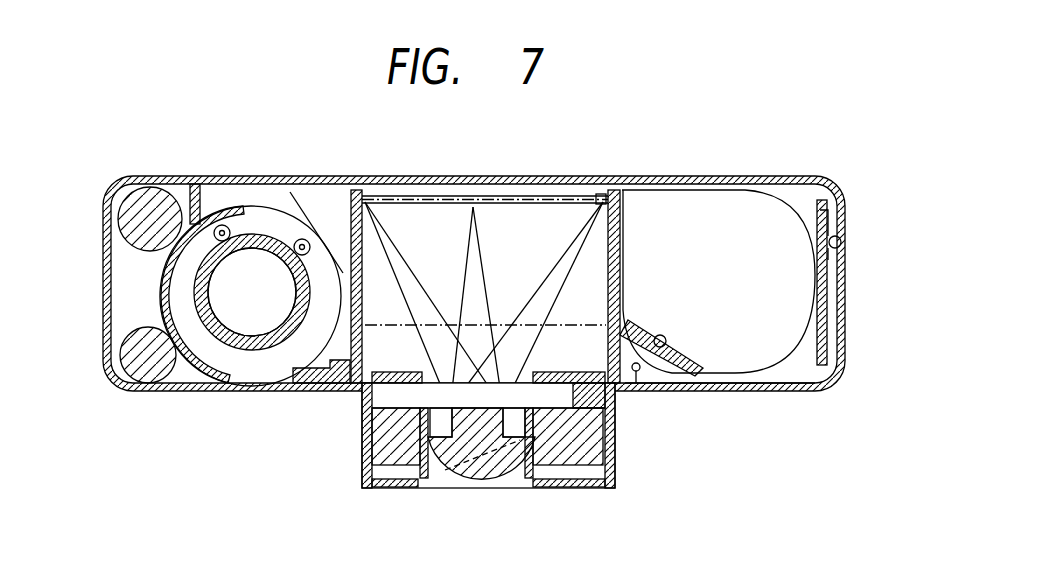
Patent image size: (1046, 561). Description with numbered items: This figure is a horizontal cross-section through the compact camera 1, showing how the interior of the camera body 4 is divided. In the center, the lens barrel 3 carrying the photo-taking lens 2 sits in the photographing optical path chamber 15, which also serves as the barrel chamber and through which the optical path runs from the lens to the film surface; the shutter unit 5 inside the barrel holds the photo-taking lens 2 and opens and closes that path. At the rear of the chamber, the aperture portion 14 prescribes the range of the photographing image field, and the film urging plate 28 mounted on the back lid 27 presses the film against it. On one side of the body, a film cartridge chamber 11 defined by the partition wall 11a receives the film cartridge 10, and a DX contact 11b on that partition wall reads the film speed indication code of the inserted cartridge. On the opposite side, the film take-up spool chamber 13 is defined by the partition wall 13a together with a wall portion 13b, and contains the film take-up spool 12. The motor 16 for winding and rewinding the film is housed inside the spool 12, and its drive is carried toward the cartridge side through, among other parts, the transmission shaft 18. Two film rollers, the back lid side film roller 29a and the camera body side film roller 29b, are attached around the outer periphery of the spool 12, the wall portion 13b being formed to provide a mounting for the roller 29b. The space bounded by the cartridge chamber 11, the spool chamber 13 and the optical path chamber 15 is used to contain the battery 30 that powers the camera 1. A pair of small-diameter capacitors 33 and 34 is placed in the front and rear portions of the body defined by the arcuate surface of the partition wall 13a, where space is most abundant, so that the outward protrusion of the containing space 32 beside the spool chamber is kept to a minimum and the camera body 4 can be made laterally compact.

The camera 1 is at (714, 123).
The photo-taking lens 2 is at (481, 472).
The lens barrel 3 is at (464, 439).
The camera body 4 is at (720, 413).
The shutter unit 5 is at (488, 459).
The film cartridge 10 is at (718, 243).
The film cartridge chamber 11 is at (814, 188).
The partition wall 11a is at (733, 314).
The DX contact 11b is at (667, 385).
The film take-up spool 12 is at (238, 339).
The film take-up spool chamber 13 is at (251, 324).
The partition wall 13a is at (196, 359).
The wall portion 13b is at (411, 272).
The aperture portion 14 is at (485, 220).
The photographing optical path chamber 15 is at (362, 317).
The motor 16 is at (252, 346).
The transmission shaft 18 is at (643, 401).
The back lid 27 is at (382, 149).
The film urging plate 28 is at (485, 159).
The back lid side film roller 29a is at (262, 189).
The camera body side film roller 29b is at (394, 245).
The battery 30 is at (597, 156).
The containing space 32 is at (124, 256).
The capacitor 33 is at (147, 385).
The capacitor 34 is at (131, 197).